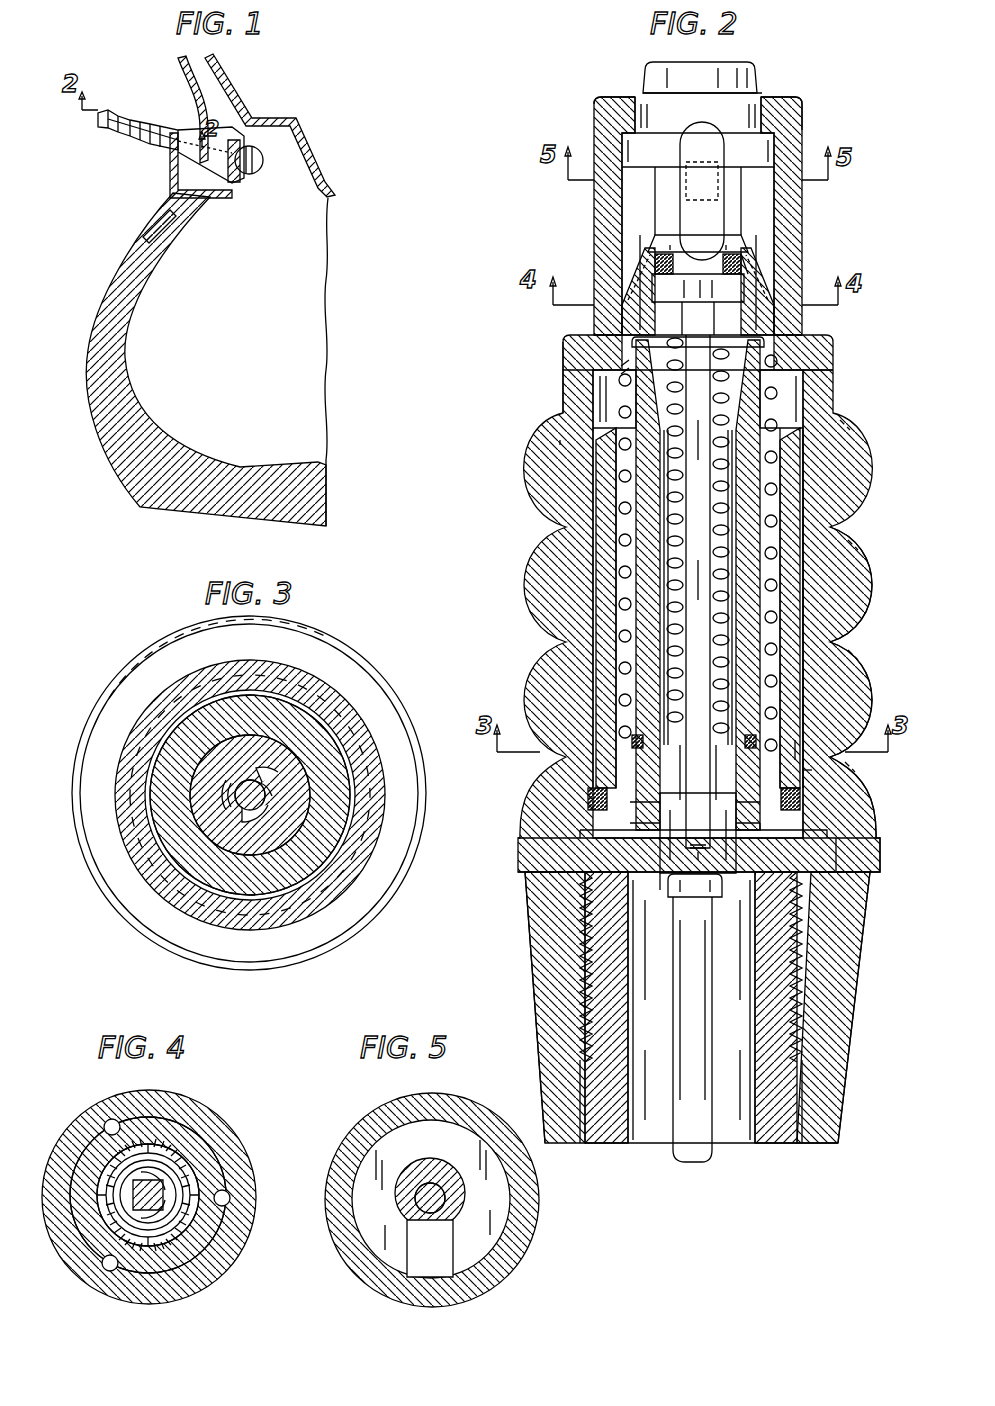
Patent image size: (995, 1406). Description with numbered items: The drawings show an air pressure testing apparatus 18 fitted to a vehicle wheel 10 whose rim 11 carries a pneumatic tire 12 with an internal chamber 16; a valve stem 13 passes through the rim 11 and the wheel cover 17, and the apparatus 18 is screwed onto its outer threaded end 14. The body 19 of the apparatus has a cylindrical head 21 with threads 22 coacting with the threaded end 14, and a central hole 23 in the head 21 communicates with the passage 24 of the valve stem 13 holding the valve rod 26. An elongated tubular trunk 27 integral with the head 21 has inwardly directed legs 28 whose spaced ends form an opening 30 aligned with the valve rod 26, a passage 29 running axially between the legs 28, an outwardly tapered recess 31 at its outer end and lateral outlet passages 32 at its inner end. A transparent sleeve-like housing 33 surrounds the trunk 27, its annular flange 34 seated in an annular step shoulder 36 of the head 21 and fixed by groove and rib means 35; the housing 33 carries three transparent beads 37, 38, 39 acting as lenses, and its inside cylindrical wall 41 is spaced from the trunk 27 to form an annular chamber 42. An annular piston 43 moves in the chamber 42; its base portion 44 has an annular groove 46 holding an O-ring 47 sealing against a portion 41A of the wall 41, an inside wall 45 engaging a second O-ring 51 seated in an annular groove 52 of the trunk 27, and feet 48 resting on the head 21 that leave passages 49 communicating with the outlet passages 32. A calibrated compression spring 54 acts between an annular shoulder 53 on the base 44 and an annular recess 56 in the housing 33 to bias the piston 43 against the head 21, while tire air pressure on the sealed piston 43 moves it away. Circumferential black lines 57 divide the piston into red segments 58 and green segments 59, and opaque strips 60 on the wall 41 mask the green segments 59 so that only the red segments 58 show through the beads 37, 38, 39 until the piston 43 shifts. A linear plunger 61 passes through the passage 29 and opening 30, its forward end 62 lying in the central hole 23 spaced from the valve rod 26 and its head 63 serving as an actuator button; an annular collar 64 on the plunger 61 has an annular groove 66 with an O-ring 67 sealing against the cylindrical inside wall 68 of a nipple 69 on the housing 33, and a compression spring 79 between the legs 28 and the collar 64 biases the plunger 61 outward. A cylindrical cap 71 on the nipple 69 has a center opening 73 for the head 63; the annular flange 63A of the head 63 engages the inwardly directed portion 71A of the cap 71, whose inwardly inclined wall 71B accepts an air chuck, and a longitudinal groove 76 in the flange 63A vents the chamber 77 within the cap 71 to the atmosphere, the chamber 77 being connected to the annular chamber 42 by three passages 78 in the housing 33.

In FIG. 1, the vehicle wheel 10 is at (338, 149).
In FIG. 1, the rim 11 is at (300, 130).
In FIG. 1, the pneumatic tire 12 is at (110, 278).
In FIG. 1, the valve stem 13 is at (225, 185).
In FIG. 2, the valve stem 13 is at (780, 1138).
In FIG. 1, the outer threaded end 14 is at (186, 156).
In FIG. 2, the outer threaded end 14 is at (605, 925).
In FIG. 1, the chamber 16 is at (244, 338).
In FIG. 1, the wheel cover 17 is at (184, 80).
In FIG. 1, the air pressure testing apparatus 18 is at (128, 157).
In FIG. 2, the air pressure testing apparatus 18 is at (514, 322).
In FIG. 2, the body 19 is at (522, 976).
In FIG. 2, the cylindrical head 21 is at (830, 1028).
In FIG. 2, the threads 22 is at (797, 966).
In FIG. 2, the central hole 23 is at (668, 884).
In FIG. 2, the passage 24 is at (648, 1148).
In FIG. 2, the valve rod 26 is at (705, 1160).
In FIG. 2, the tubular trunk 27 is at (758, 636).
In FIG. 3, the tubular trunk 27 is at (215, 822).
In FIG. 2, the legs 28 is at (716, 770).
In FIG. 3, the legs 28 is at (262, 826).
In FIG. 2, the passage 29 is at (688, 640).
In FIG. 2, the opening 30 is at (706, 720).
In FIG. 2, the outwardly tapered recess 31 is at (781, 399).
In FIG. 2, the outlet passages 32 is at (740, 812).
In FIG. 2, the sleeve-like housing 33 is at (880, 438).
In FIG. 3, the sleeve-like housing 33 is at (116, 726).
In FIG. 2, the annular flange 34 is at (850, 857).
In FIG. 2, the groove and rib means 35 is at (560, 846).
In FIG. 2, the annular step shoulder 36 is at (530, 890).
In FIG. 2, the transparent bead 37 is at (868, 476).
In FIG. 2, the transparent bead 38 is at (870, 595).
In FIG. 2, the transparent bead 39 is at (868, 693).
In FIG. 3, the transparent bead 39 is at (300, 660).
In FIG. 2, the inside cylindrical wall 41 is at (590, 401).
In FIG. 2, the wall portion 41A is at (588, 796).
In FIG. 2, the annular chamber 42 is at (600, 388).
In FIG. 2, the annular piston 43 is at (820, 520).
In FIG. 2, the base portion 44 is at (760, 826).
In FIG. 3, the base portion 44 is at (210, 730).
In FIG. 2, the inside wall 45 is at (632, 742).
In FIG. 2, the annular groove 46 is at (808, 774).
In FIG. 2, the O-ring 47 is at (800, 802).
In FIG. 2, the feet 48 is at (722, 890).
In FIG. 2, the passages 49 is at (580, 833).
In FIG. 2, the second O-ring 51 is at (716, 750).
In FIG. 2, the annular groove 52 is at (745, 740).
In FIG. 2, the annular shoulder 53 is at (800, 745).
In FIG. 2, the calibrated compression spring 54 is at (790, 552).
In FIG. 2, the annular recess 56 is at (585, 352).
In FIG. 2, the circumferential black lines 57 is at (593, 782).
In FIG. 2, the red segments 58 is at (560, 700).
In FIG. 2, the green segments 59 is at (596, 768).
In FIG. 2, the opaque strips 60 is at (845, 730).
In FIG. 2, the linear plunger 61 is at (710, 502).
In FIG. 3, the linear plunger 61 is at (242, 790).
In FIG. 4, the linear plunger 61 is at (160, 1190).
In FIG. 5, the linear plunger 61 is at (418, 1198).
In FIG. 2, the forward end 62 is at (698, 856).
In FIG. 2, the head 63 is at (654, 76).
In FIG. 5, the head 63 is at (492, 1210).
In FIG. 2, the annular flange 63A is at (772, 143).
In FIG. 2, the annular collar 64 is at (730, 250).
In FIG. 4, the annular collar 64 is at (168, 1160).
In FIG. 2, the annular groove 66 is at (655, 265).
In FIG. 2, the O-ring 67 is at (742, 262).
In FIG. 2, the cylindrical inside wall 68 is at (622, 320).
In FIG. 2, the nipple 69 is at (636, 268).
In FIG. 2, the cylindrical cap 71 is at (803, 212).
In FIG. 4, the cylindrical cap 71 is at (215, 1262).
In FIG. 5, the cylindrical cap 71 is at (505, 1268).
In FIG. 2, the inwardly directed portion 71A is at (790, 97).
In FIG. 2, the inwardly inclined wall 71B is at (600, 100).
In FIG. 2, the center opening 73 is at (800, 118).
In FIG. 2, the longitudinal groove 76 is at (685, 132).
In FIG. 5, the longitudinal groove 76 is at (407, 1277).
In FIG. 2, the chamber 77 is at (654, 201).
In FIG. 2, the passages 78 is at (815, 353).
In FIG. 4, the passages 78 is at (108, 1262).
In FIG. 2, the compression spring 79 is at (764, 380).
In FIG. 3, the compression spring 79 is at (232, 795).
In FIG. 4, the compression spring 79 is at (150, 1160).